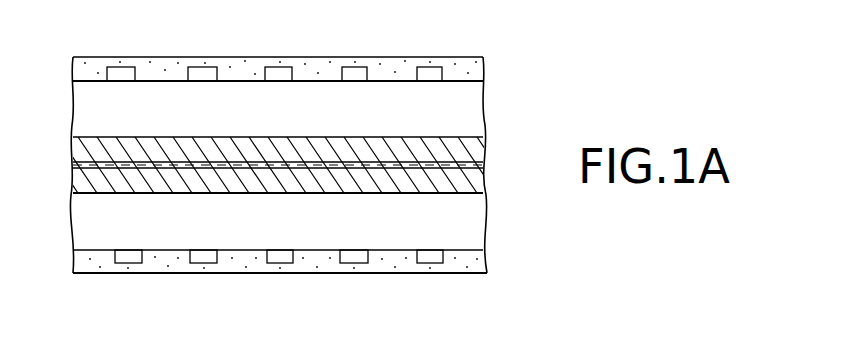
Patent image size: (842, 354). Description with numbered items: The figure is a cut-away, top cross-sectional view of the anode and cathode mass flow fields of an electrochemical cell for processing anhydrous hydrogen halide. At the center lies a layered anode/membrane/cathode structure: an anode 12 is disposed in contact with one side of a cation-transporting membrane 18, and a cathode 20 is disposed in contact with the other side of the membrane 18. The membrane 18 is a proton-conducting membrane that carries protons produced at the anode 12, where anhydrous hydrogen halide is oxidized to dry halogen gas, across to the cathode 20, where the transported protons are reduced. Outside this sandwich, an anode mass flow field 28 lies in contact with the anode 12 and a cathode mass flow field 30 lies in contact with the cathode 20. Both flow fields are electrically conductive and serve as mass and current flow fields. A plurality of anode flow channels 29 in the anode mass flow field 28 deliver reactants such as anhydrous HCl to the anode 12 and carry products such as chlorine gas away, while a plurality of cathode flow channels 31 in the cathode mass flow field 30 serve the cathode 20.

The anode 12 is at (107, 146).
The cation-transporting membrane 18 is at (483, 163).
The cathode 20 is at (105, 193).
The anode mass flow field 28 is at (212, 56).
The anode flow channels 29 is at (125, 66).
The cathode mass flow field 30 is at (210, 275).
The cathode flow channels 31 is at (127, 276).